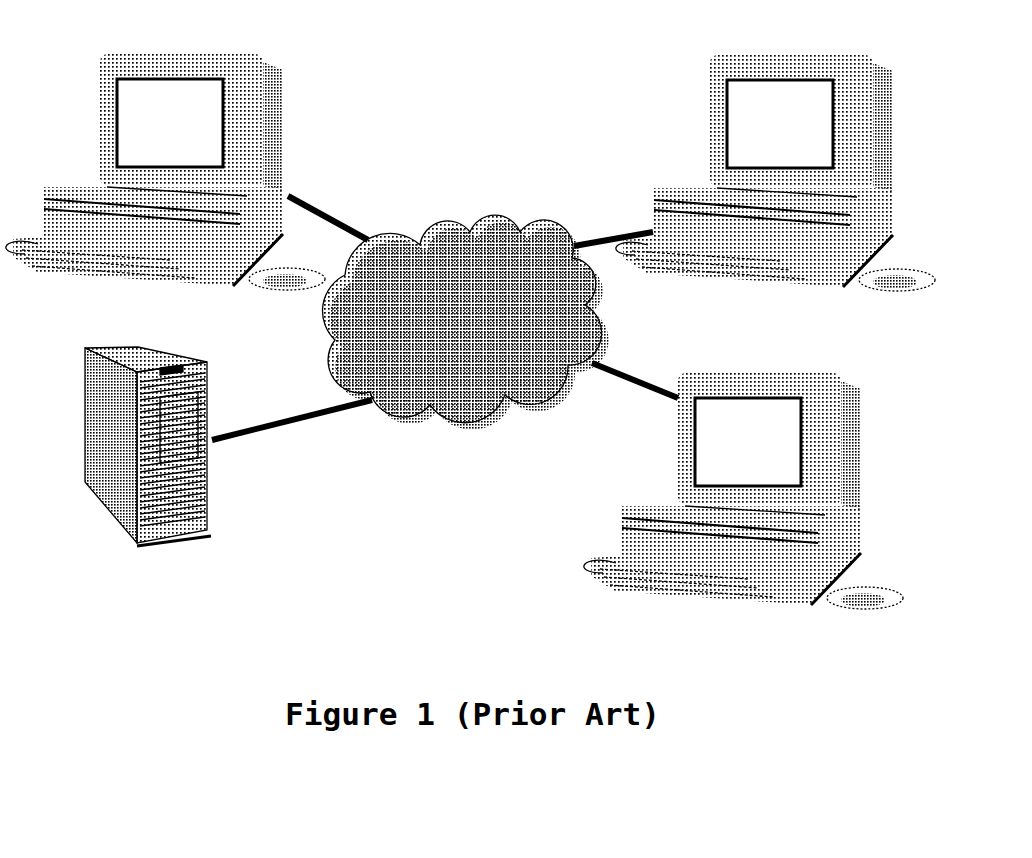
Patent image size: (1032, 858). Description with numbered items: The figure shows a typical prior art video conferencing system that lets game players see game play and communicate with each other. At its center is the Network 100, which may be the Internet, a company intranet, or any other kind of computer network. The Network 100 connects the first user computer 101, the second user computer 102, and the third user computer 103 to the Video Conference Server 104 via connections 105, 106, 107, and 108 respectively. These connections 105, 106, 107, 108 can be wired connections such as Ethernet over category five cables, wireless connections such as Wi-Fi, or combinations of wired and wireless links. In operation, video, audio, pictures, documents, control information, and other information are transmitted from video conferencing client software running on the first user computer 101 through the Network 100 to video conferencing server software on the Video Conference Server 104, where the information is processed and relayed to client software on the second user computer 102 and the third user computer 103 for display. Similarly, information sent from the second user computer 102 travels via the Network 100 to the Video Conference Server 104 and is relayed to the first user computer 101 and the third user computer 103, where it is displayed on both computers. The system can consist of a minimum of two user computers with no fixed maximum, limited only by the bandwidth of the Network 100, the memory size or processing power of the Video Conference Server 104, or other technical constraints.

The Network 100 is at (457, 245).
The User 1 Computer 101 is at (252, 102).
The User 2 Computer 102 is at (720, 118).
The User 3 Computer 103 is at (672, 523).
The Video Conference Server 104 is at (183, 398).
The connection 105 is at (310, 208).
The connection 106 is at (590, 237).
The connection 107 is at (622, 368).
The connection 108 is at (288, 425).